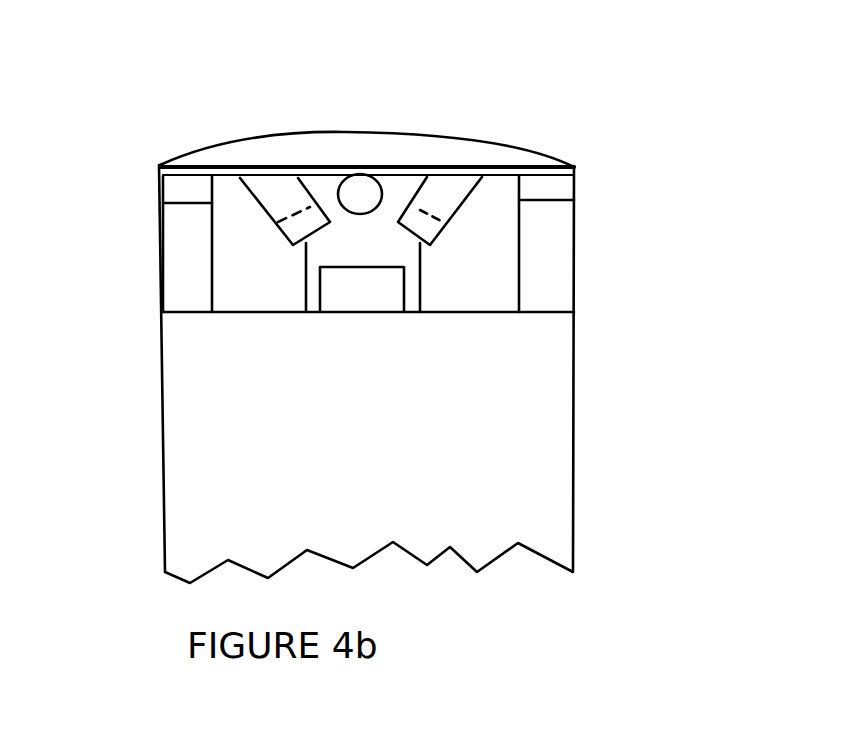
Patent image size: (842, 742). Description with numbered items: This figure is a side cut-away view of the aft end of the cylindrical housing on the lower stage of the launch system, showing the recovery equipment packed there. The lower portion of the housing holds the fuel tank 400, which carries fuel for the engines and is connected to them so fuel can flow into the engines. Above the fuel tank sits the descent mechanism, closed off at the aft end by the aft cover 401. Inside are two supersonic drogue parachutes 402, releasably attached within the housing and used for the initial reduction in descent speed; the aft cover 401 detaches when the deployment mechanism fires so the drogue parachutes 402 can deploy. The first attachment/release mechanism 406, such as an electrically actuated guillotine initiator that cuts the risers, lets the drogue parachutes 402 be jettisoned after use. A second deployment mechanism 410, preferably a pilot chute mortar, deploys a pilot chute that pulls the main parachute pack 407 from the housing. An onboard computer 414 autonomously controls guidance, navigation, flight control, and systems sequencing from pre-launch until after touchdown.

The fuel tank 400 is at (508, 419).
The aft cover 401 is at (277, 128).
The supersonic drogue parachute 402 is at (468, 175).
The first attachment/release mechanism 406 is at (251, 166).
The main parachute pack 407 is at (487, 250).
The second deployment mechanism 410 is at (368, 176).
The onboard computer 414 is at (344, 292).